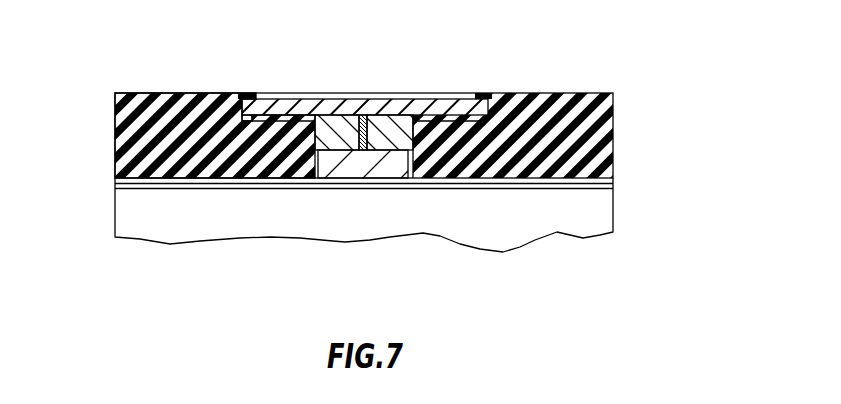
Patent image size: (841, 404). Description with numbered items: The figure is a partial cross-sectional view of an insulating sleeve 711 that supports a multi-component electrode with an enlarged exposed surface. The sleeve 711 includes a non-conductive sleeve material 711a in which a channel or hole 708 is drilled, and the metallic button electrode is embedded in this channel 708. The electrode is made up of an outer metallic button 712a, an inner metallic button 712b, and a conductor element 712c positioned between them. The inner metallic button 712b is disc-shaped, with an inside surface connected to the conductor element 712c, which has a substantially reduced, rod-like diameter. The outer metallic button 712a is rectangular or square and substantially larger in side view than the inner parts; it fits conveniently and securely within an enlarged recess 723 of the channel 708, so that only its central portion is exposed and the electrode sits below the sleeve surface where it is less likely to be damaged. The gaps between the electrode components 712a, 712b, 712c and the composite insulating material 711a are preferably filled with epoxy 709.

The insulating sleeve 711 is at (616, 140).
The non-conductive sleeve material 711a is at (140, 140).
The outer metallic button 712a is at (228, 95).
The inner metallic button 712b is at (382, 178).
The conductor element 712c is at (363, 178).
The enlarged recess 723 is at (243, 122).
The channel or hole 708 is at (318, 178).
The epoxy 709 is at (415, 132).